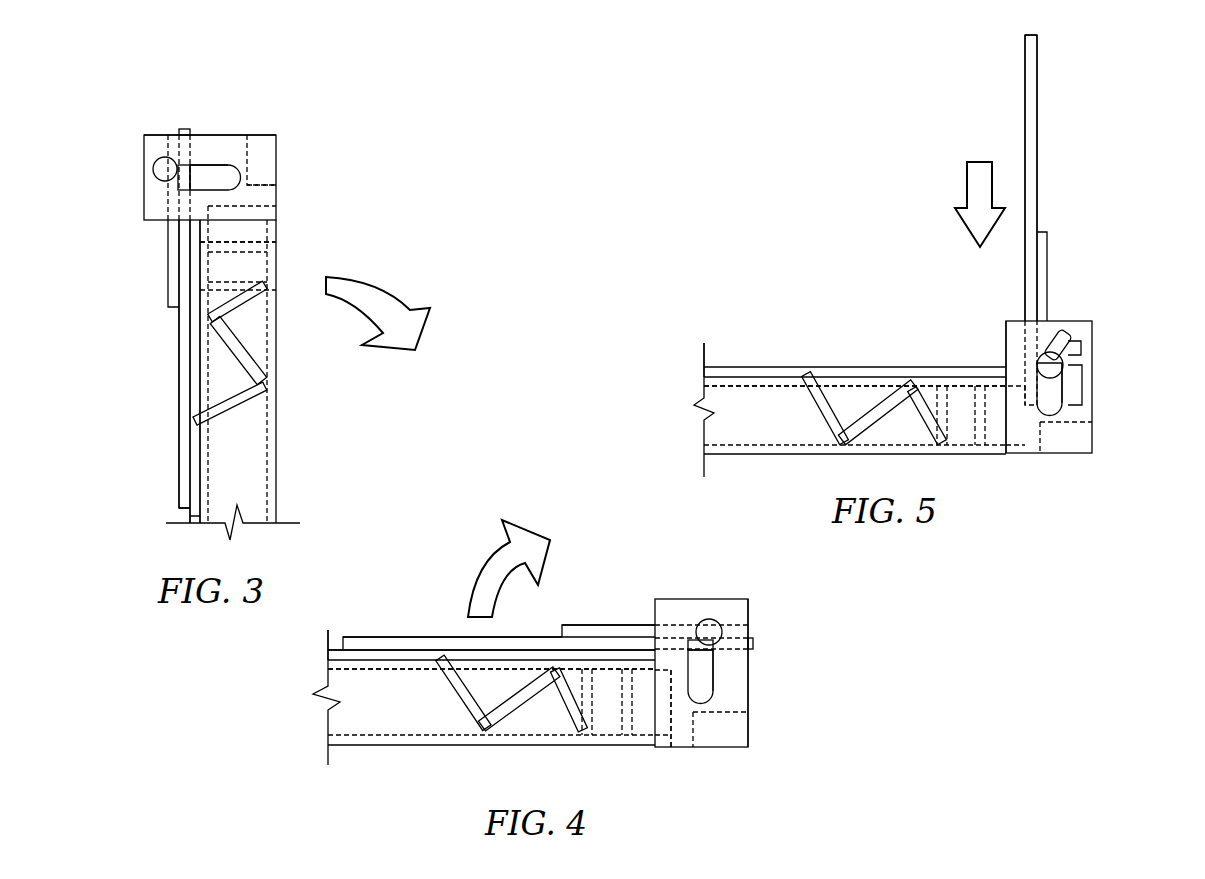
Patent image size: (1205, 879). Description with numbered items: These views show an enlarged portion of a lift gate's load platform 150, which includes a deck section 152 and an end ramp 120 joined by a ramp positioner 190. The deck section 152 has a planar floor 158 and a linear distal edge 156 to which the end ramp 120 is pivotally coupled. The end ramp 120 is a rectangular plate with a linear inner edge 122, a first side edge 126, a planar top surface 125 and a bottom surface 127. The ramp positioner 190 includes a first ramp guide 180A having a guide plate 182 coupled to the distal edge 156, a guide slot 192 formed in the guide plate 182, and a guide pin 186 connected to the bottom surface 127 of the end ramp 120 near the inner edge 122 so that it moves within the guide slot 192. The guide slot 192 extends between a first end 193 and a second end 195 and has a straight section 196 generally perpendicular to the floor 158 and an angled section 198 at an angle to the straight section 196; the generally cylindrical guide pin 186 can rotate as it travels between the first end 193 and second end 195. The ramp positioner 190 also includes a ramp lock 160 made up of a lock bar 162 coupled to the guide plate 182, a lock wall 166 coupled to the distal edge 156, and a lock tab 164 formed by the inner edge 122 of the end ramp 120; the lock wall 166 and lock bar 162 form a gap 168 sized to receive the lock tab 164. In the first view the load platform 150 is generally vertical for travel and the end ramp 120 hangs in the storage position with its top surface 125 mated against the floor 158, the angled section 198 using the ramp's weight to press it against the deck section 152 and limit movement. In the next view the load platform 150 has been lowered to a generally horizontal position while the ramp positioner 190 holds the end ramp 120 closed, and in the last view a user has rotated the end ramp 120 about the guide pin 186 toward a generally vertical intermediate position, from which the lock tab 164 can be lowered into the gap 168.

In FIG. 3, the end ramp 120 is at (160, 372).
In FIG. 4, the end ramp 120 is at (431, 630).
In FIG. 5, the end ramp 120 is at (1052, 97).
In FIG. 3, the inner edge 122 is at (186, 128).
In FIG. 4, the inner edge 122 is at (755, 644).
In FIG. 3, the planar top surface 125 is at (192, 469).
In FIG. 4, the planar top surface 125 is at (381, 644).
In FIG. 5, the planar top surface 125 is at (1022, 113).
In FIG. 3, the first side edge 126 is at (185, 463).
In FIG. 4, the first side edge 126 is at (512, 645).
In FIG. 5, the first side edge 126 is at (1028, 75).
In FIG. 3, the bottom surface 127 is at (177, 407).
In FIG. 4, the bottom surface 127 is at (391, 632).
In FIG. 5, the bottom surface 127 is at (1035, 133).
In FIG. 3, the load platform 150 is at (492, 170).
In FIG. 4, the load platform 150 is at (858, 723).
In FIG. 5, the load platform 150 is at (796, 149).
In FIG. 3, the deck section 152 is at (298, 418).
In FIG. 4, the deck section 152 is at (368, 768).
In FIG. 5, the deck section 152 is at (777, 348).
In FIG. 3, the distal edge 156 is at (245, 225).
In FIG. 4, the distal edge 156 is at (655, 722).
In FIG. 5, the distal edge 156 is at (1003, 428).
In FIG. 3, the floor 158 is at (188, 516).
In FIG. 4, the floor 158 is at (337, 630).
In FIG. 5, the floor 158 is at (743, 362).
In FIG. 3, the ramp lock 160 is at (340, 152).
In FIG. 4, the ramp lock 160 is at (706, 768).
In FIG. 5, the ramp lock 160 is at (1060, 472).
In FIG. 3, the lock bar 162 is at (278, 152).
In FIG. 4, the lock bar 162 is at (728, 722).
In FIG. 5, the lock bar 162 is at (1066, 443).
In FIG. 3, the lock tab 164 is at (181, 128).
In FIG. 4, the lock tab 164 is at (755, 648).
In FIG. 5, the lock tab 164 is at (1030, 372).
In FIG. 3, the lock wall 166 is at (272, 206).
In FIG. 4, the lock wall 166 is at (670, 728).
In FIG. 5, the lock wall 166 is at (1020, 425).
In FIG. 3, the gap 168 is at (276, 193).
In FIG. 4, the gap 168 is at (677, 722).
In FIG. 5, the gap 168 is at (1028, 433).
In FIG. 3, the first ramp guide 180A is at (282, 107).
In FIG. 4, the first ramp guide 180A is at (765, 750).
In FIG. 5, the first ramp guide 180A is at (1113, 474).
In FIG. 3, the guide plate 182 is at (197, 143).
In FIG. 4, the guide plate 182 is at (732, 665).
In FIG. 5, the guide plate 182 is at (1013, 325).
In FIG. 3, the guide pin 186 is at (160, 174).
In FIG. 4, the guide pin 186 is at (708, 630).
In FIG. 5, the guide pin 186 is at (1052, 365).
In FIG. 3, the ramp positioner 190 is at (388, 73).
In FIG. 4, the ramp positioner 190 is at (782, 825).
In FIG. 5, the ramp positioner 190 is at (1133, 556).
In FIG. 3, the guide slot 192 is at (218, 160).
In FIG. 4, the guide slot 192 is at (718, 683).
In FIG. 5, the guide slot 192 is at (1082, 380).
In FIG. 3, the first end 193 is at (240, 188).
In FIG. 4, the first end 193 is at (718, 700).
In FIG. 5, the first end 193 is at (1052, 418).
In FIG. 3, the second end 195 is at (172, 158).
In FIG. 4, the second end 195 is at (715, 642).
In FIG. 5, the second end 195 is at (1065, 345).
In FIG. 5, the straight section 196 is at (1080, 385).
In FIG. 5, the angled section 198 is at (1085, 355).